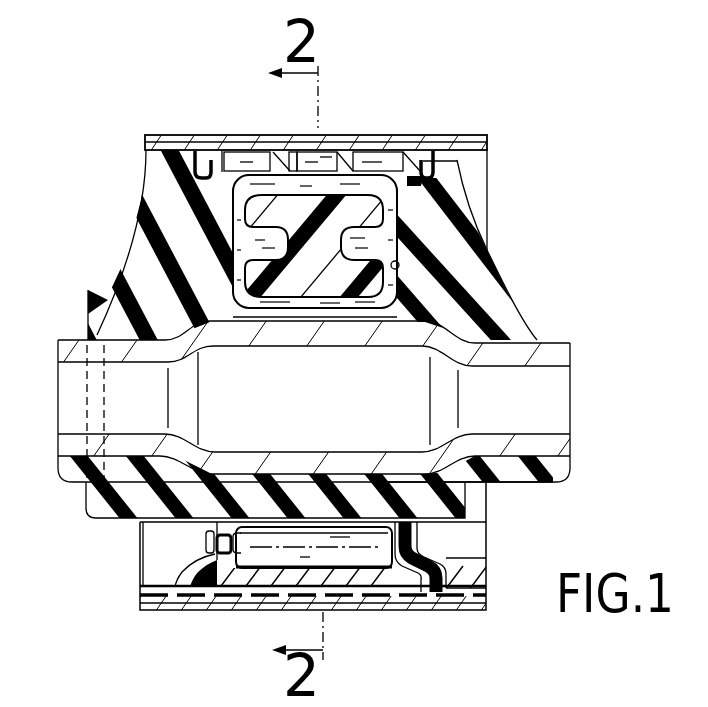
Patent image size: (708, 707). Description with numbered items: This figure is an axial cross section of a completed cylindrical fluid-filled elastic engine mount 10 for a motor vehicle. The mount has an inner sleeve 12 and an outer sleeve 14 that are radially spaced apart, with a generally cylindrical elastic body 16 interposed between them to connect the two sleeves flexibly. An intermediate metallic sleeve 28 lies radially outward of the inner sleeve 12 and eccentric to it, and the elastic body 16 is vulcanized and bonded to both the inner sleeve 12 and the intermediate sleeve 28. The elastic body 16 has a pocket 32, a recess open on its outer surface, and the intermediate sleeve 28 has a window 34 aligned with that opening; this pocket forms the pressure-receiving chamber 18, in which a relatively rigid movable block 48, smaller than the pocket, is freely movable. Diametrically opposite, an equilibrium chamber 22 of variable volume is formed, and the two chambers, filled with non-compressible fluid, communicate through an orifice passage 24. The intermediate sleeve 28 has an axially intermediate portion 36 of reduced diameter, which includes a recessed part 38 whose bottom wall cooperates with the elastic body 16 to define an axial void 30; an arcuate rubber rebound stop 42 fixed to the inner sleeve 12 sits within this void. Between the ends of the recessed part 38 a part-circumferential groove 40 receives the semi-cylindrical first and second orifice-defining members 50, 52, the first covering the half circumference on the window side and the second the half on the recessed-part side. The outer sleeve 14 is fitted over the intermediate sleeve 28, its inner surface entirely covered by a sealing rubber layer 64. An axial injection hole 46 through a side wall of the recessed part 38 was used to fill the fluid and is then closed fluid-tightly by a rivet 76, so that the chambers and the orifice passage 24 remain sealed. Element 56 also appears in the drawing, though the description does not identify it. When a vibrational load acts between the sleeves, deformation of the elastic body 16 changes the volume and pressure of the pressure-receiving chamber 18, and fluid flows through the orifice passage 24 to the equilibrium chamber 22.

The engine mount 10 is at (136, 106).
The inner sleeve 12 is at (530, 350).
The outer sleeve 14 is at (342, 597).
The elastic body 16 is at (180, 201).
The pressure-receiving chamber 18 is at (392, 199).
The equilibrium chamber 22 is at (263, 556).
The orifice passage 24 is at (370, 151).
The intermediate metallic sleeve 28 is at (455, 136).
The axial void 30 is at (335, 485).
The pocket 32 is at (392, 268).
The window 34 is at (245, 150).
The axially intermediate portion 36 is at (437, 592).
The recessed part 38 is at (362, 530).
The part-circumferential groove 40 is at (212, 151).
The rebound stop 42 is at (110, 491).
The injection hole 46 is at (216, 588).
The movable block 48 is at (240, 268).
The first orifice-defining member 50 is at (347, 150).
The second orifice-defining member 52 is at (392, 574).
The spacer 56 is at (312, 150).
The sealing rubber layer 64 is at (450, 592).
The rivet 76 is at (190, 541).